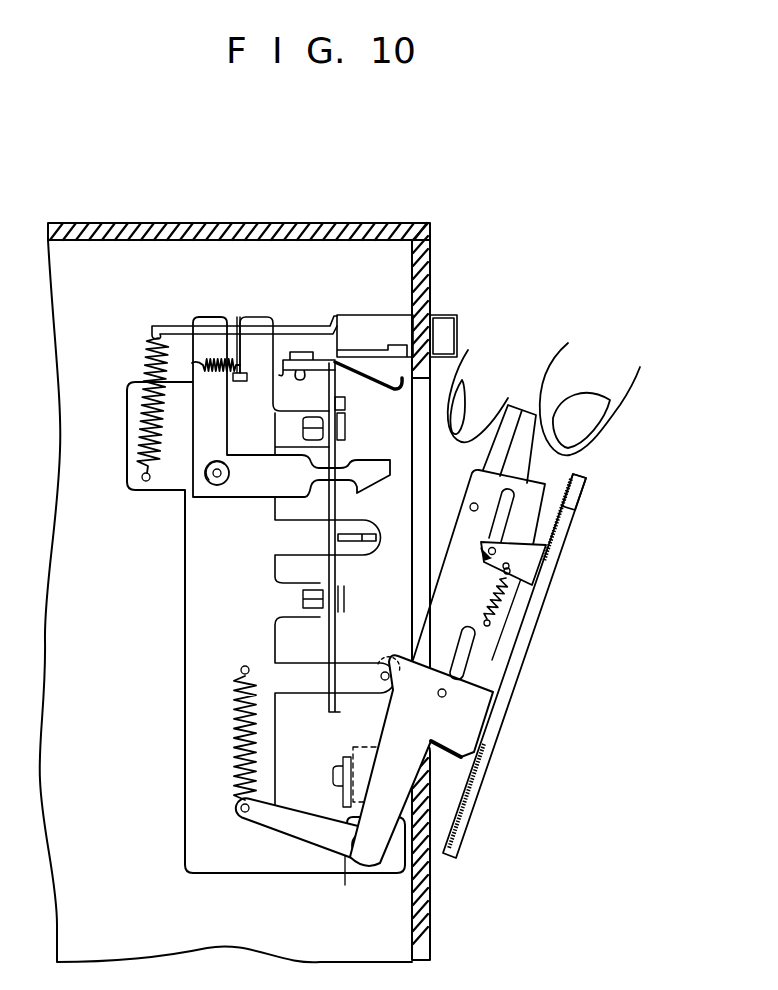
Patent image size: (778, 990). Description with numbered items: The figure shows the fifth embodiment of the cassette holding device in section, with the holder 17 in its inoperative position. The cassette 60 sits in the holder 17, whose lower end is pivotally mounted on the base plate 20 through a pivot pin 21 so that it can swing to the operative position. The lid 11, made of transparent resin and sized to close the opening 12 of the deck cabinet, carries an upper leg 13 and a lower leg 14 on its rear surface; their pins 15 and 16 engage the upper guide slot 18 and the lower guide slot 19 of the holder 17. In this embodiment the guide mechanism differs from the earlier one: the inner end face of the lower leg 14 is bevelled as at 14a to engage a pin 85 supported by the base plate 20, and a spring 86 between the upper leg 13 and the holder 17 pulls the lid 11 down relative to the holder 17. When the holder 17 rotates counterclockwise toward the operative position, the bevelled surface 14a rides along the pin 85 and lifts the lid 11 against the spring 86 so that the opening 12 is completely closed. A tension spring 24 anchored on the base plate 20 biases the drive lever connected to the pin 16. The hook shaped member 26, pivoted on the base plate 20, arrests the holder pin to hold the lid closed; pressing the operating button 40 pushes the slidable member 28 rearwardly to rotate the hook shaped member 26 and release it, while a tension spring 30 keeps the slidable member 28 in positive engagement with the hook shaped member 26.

The lid 11 is at (580, 503).
The opening 12 is at (413, 427).
The upper leg 13 is at (537, 557).
The lower leg 14 is at (473, 733).
The bevelled surface 14a is at (400, 699).
The pin 15 is at (485, 546).
The pin 16 is at (445, 697).
The holder 17 is at (515, 678).
The upper guide slot 18 is at (509, 500).
The lower guide slot 19 is at (456, 634).
The base plate 20 is at (263, 867).
The pivot pin 21 is at (360, 873).
The tension spring 24 is at (239, 720).
The hook shaped member 26 is at (247, 493).
The slidable member 28 is at (302, 323).
The tension spring 30 is at (140, 424).
The operating button 40 is at (441, 323).
The cassette 60 is at (528, 412).
The pin 85 is at (382, 667).
The spring 86 is at (493, 588).